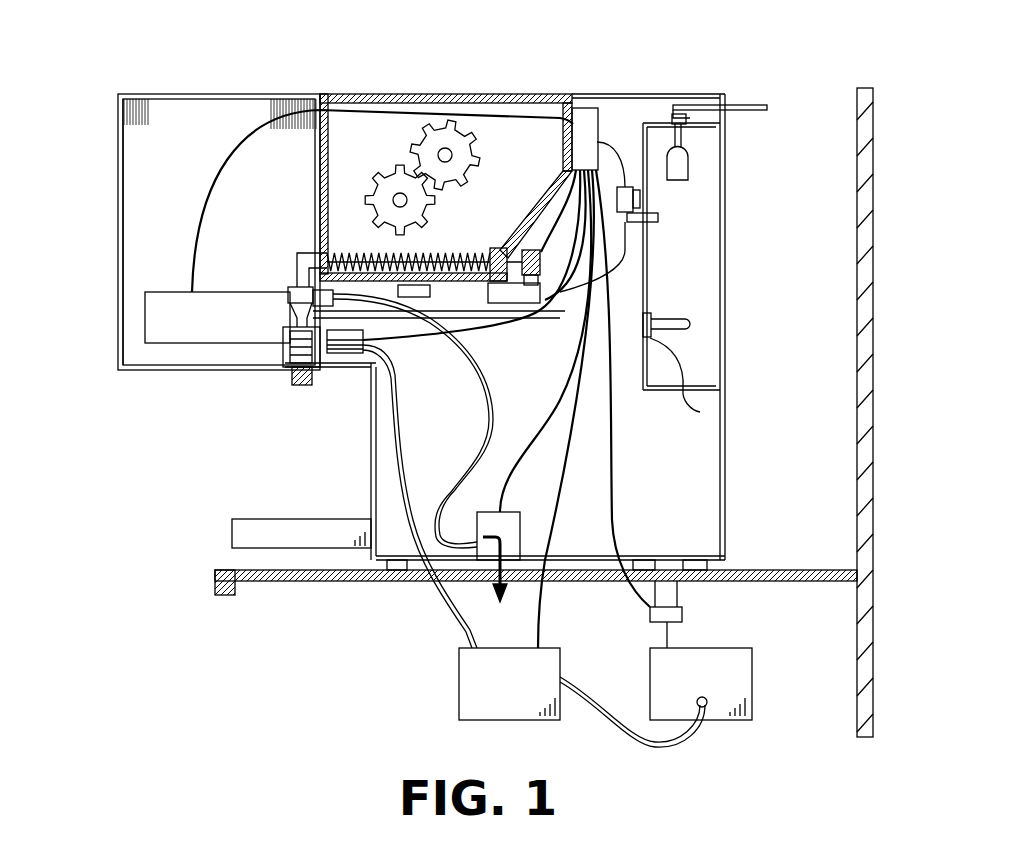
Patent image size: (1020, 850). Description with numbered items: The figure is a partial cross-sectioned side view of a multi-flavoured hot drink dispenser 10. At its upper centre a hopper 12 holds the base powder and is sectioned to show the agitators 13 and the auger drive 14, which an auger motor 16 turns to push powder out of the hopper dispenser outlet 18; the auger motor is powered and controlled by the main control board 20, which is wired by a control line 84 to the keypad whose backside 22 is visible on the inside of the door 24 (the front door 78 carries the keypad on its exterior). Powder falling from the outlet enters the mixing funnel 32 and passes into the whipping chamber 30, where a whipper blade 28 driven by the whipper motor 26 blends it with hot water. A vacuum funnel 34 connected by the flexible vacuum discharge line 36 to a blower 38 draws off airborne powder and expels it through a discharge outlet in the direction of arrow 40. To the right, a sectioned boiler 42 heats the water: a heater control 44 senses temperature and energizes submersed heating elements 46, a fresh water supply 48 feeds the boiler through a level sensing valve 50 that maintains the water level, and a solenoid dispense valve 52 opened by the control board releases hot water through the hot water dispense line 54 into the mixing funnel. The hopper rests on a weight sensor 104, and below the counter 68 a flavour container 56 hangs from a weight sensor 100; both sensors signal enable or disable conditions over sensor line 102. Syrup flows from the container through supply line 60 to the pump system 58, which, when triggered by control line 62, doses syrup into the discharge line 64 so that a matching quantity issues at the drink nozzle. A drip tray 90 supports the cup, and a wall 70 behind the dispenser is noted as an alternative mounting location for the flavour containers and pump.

The multi-flavoured hot drink dispenser 10 is at (736, 462).
The hopper 12 is at (388, 133).
The agitators 13 is at (433, 213).
The auger drive 14 is at (350, 250).
The auger motor 16 is at (540, 292).
The hopper dispenser outlet 18 is at (296, 252).
The main control board 20 is at (597, 124).
The keypad backside 22 is at (152, 312).
The door 24 is at (158, 88).
The whipper motor 26 is at (340, 346).
The whipper blade 28 is at (293, 333).
The whipping chamber 30 is at (272, 366).
The mixing funnel 32 is at (295, 312).
The vacuum funnel 34 is at (288, 298).
The vacuum discharge line 36 is at (487, 437).
The blower 38 is at (513, 546).
The arrow 40 is at (510, 603).
The boiler 42 is at (725, 282).
The heater control 44 is at (700, 412).
The heating elements 46 is at (690, 323).
The fresh water supply 48 is at (742, 105).
The level sensing valve 50 is at (684, 162).
The dispense valve 52 is at (640, 197).
The hot water dispense line 54 is at (628, 255).
The flavour container 56 is at (752, 695).
The pump system 58 is at (459, 705).
The supply line 60 is at (655, 740).
The control line 62 is at (598, 482).
The discharge line 64 is at (468, 600).
The counter 68 is at (213, 575).
The wall 70 is at (880, 200).
The front door 78 is at (117, 190).
The control line 84 is at (240, 150).
The drip tray 90 is at (232, 533).
The weight sensor 100 is at (682, 612).
The sensor line 102 is at (517, 303).
The weight sensor 104 is at (413, 297).